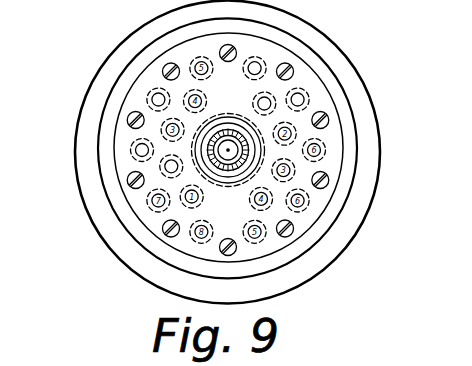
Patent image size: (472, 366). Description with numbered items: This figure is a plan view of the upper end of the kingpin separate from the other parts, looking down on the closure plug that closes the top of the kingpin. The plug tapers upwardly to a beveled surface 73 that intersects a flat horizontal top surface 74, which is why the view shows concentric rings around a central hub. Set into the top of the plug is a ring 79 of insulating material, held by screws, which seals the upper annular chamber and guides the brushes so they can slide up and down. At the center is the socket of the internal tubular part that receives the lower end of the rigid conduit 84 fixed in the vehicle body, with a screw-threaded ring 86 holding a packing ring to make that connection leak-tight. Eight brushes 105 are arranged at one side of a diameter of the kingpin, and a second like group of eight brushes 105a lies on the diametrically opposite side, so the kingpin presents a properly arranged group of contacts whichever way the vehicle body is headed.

The beveled surface 73 is at (365, 118).
The horizontal top surface 74 is at (340, 95).
The ring of insulating material 79 is at (337, 151).
The rigid conduit 84 is at (249, 151).
The screw-threaded ring 86 is at (210, 163).
The brush 105 is at (305, 97).
The brush of second group 105a is at (161, 167).